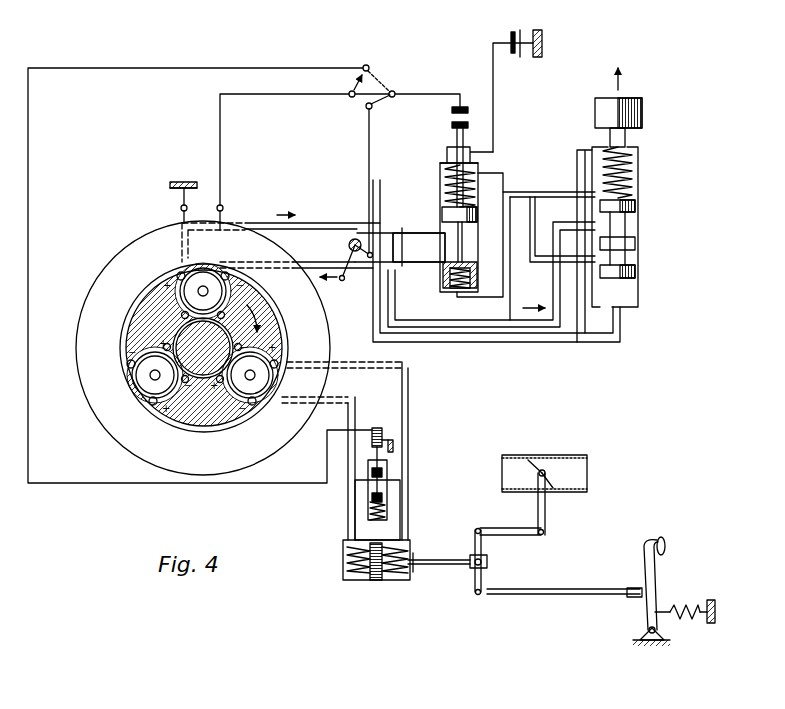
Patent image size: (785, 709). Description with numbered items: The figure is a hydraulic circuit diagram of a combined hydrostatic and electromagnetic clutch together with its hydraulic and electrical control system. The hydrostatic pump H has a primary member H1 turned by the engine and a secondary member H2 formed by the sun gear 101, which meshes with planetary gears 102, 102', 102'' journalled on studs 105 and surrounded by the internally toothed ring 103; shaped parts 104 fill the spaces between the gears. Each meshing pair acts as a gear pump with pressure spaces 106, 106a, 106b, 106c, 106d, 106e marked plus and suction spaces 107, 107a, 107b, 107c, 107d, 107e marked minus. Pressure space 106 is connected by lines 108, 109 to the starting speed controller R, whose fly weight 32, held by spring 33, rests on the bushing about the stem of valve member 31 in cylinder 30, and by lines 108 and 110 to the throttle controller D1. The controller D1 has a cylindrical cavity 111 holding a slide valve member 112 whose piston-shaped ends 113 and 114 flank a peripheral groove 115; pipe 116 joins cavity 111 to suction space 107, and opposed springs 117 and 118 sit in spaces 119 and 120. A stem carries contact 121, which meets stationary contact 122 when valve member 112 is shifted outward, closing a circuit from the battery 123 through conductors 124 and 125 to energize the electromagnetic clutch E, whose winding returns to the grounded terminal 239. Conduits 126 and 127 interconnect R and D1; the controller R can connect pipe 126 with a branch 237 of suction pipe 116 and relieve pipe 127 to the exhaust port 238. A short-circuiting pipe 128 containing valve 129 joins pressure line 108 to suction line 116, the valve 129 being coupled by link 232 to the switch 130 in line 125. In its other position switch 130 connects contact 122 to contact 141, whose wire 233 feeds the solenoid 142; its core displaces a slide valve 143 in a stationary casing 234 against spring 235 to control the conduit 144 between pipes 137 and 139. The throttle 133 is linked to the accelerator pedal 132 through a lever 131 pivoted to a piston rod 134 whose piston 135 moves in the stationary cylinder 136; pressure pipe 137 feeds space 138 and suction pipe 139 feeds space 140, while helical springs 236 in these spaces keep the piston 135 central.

The central or sun gear 101 is at (165, 318).
The planetary gear 102 is at (203, 277).
The planetary gear 102' is at (119, 388).
The planetary gear 102'' is at (272, 375).
The internally toothed ring 103 is at (153, 397).
The shaped parts 104 is at (133, 332).
The studs 105 is at (150, 373).
The pressure space 106 is at (168, 268).
The pressure space 106a is at (238, 302).
The pressure space 106b is at (273, 363).
The pressure space 106c is at (208, 422).
The pressure space 106d is at (147, 400).
The pressure space 106e is at (127, 347).
The suction space 107 is at (228, 297).
The suction space 107a is at (178, 275).
The suction space 107b is at (253, 406).
The suction space 107c is at (280, 335).
The suction space 107d is at (128, 365).
The suction space 107e is at (158, 406).
The pressure line 108 is at (183, 246).
The line 109 is at (423, 320).
The line 110 is at (403, 233).
The cylindrical cavity 111 is at (479, 227).
The slide valve member 112 is at (463, 243).
The piston-shaped end 113 is at (447, 209).
The piston-shaped end 114 is at (478, 267).
The peripheral groove 115 is at (448, 247).
The suction pipe 116 is at (402, 228).
The helical spring 117 is at (473, 288).
The helical spring 118 is at (452, 167).
The space 119 is at (447, 291).
The space 120 is at (448, 181).
The electrical contact 121 is at (448, 164).
The stationary contact 122 is at (451, 111).
The battery 123 is at (517, 30).
The conductor 124 is at (494, 86).
The conductor 125 is at (292, 95).
The conduit 126 is at (545, 263).
The conduit 127 is at (563, 195).
The short-circuiting pipe 128 is at (355, 238).
The valve 129 is at (348, 246).
The electrical switch 130 is at (366, 107).
The lever 131 is at (483, 548).
The accelerator pedal 132 is at (646, 554).
The throttle 133 is at (541, 458).
The piston rod 134 is at (445, 566).
The piston 135 is at (376, 582).
The stationary cylinder 136 is at (398, 581).
The pressure pipe 137 is at (409, 384).
The pressure space 138 is at (388, 541).
The suction pipe 139 is at (355, 511).
The suction space 140 is at (352, 581).
The contact 141 is at (366, 65).
The solenoid 142 is at (380, 430).
The slide valve 143 is at (383, 473).
The conduit 144 is at (388, 490).
The link 232 is at (369, 157).
The wire 233 is at (28, 125).
The stationary casing 234 is at (388, 512).
The spring 235 is at (368, 512).
The helical springs 236 is at (350, 561).
The branch 237 is at (605, 342).
The exhaust port 238 is at (592, 150).
The grounded terminal 239 is at (188, 208).
The cylinder 30 is at (639, 292).
The valve member 31 is at (628, 229).
The fly weight 32 is at (600, 109).
The spring 33 is at (633, 161).
The throttle controller D1 is at (479, 199).
The electromagnetic clutch E is at (172, 221).
The hydrostatic pump H is at (178, 412).
The primary member H1 is at (170, 293).
The secondary member H2 is at (187, 337).
The starting speed controller R is at (636, 210).